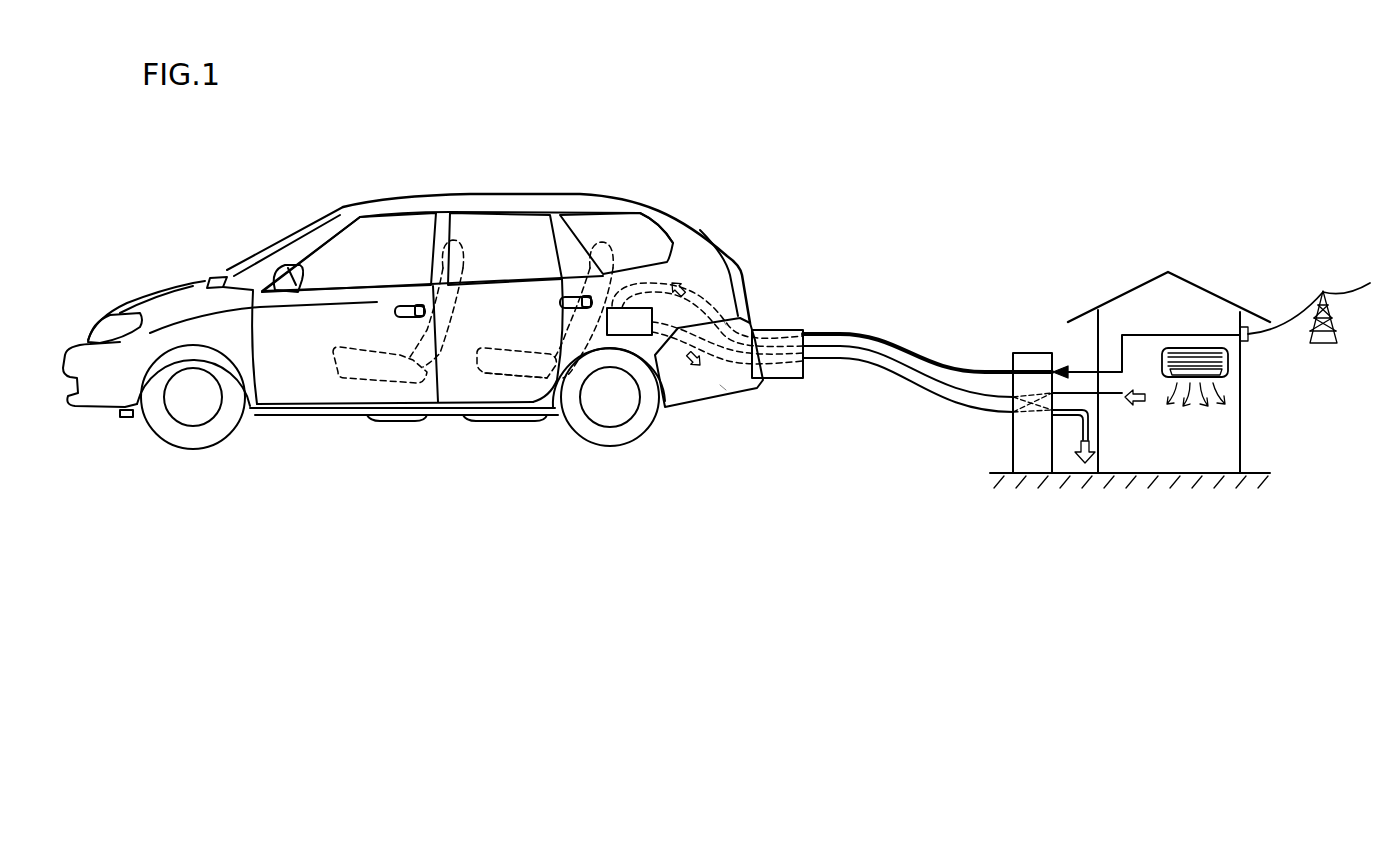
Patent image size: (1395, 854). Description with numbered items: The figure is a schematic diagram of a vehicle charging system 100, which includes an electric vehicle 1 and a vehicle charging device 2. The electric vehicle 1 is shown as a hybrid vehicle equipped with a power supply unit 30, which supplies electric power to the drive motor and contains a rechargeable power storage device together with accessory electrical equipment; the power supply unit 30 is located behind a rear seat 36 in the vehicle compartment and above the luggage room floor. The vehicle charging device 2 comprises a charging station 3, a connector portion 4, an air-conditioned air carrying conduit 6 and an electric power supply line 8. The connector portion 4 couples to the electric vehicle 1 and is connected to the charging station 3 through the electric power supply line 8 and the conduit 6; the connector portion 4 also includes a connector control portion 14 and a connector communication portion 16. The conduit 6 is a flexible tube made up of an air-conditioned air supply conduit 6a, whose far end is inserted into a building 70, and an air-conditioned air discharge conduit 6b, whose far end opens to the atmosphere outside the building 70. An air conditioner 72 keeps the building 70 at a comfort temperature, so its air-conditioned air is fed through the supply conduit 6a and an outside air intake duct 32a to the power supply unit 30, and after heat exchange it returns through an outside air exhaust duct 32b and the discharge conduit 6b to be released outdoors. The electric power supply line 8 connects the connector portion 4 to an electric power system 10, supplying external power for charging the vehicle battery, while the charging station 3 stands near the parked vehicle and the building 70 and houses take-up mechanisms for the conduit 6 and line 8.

The electric vehicle 1 is at (527, 185).
The vehicle charging device 2 is at (1062, 283).
The charging station 3 is at (1032, 353).
The connector portion 4 is at (792, 382).
The air-conditioned air carrying conduit 6 is at (883, 383).
The air-conditioned air supply conduit 6a is at (980, 400).
The air-conditioned air discharge conduit 6b is at (948, 400).
The electric power supply line 8 is at (892, 338).
The electric power system 10 is at (1297, 312).
The connector control portion 14 is at (1122, 402).
The connector communication portion 16 is at (1065, 416).
The power supply unit 30 is at (637, 335).
The outside air intake duct 32a is at (724, 330).
The outside air exhaust duct 32b is at (724, 335).
The rear seat 36 is at (510, 363).
The building 70 is at (1210, 287).
The air conditioner 72 is at (1225, 358).
The vehicle charging system 100 is at (1313, 147).